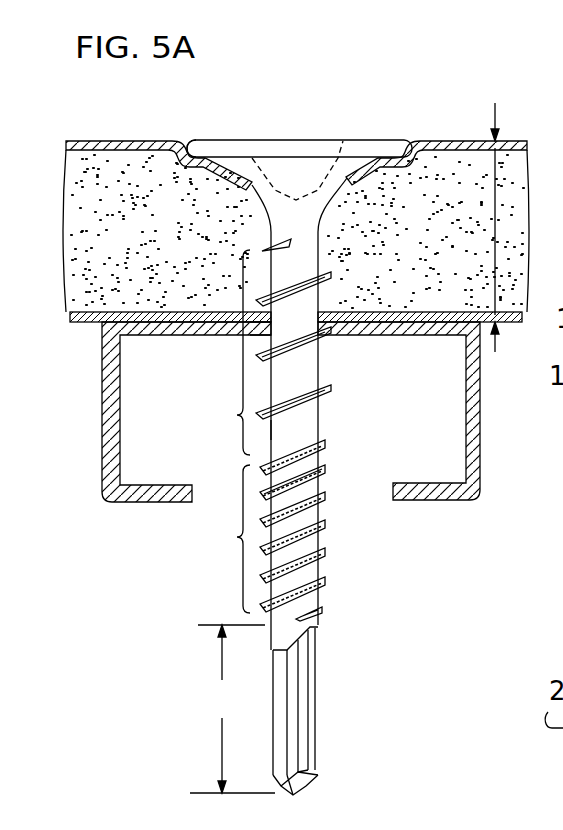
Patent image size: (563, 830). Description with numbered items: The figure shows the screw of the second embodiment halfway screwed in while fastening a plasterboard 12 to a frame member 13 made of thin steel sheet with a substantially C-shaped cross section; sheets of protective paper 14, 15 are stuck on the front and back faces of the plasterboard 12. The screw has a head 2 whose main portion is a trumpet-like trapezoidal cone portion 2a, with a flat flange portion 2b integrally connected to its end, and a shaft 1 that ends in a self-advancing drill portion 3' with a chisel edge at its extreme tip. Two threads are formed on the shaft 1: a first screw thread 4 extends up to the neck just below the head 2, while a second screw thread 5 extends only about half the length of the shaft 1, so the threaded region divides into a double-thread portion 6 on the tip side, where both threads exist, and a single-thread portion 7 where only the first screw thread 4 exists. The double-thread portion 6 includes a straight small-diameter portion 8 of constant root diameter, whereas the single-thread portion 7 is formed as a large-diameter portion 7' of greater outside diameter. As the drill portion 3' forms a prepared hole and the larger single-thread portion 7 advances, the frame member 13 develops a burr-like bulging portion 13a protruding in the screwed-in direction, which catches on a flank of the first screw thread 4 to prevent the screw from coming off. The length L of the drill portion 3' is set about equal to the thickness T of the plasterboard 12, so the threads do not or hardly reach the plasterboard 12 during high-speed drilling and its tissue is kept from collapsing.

The shaft 1 is at (320, 425).
The head 2 is at (345, 137).
The trapezoidal cone portion 2a is at (295, 168).
The flange portion 2b is at (228, 146).
The drill portion 3' is at (324, 711).
The first screw thread 4 is at (306, 348).
The second screw thread 5 is at (320, 580).
The double-thread portion 6 is at (230, 539).
The single-thread portion 7 is at (233, 352).
The large-diameter portion 7' is at (240, 439).
The small-diameter portion 8 is at (320, 595).
The plasterboard 12 is at (100, 256).
The frame member 13 is at (112, 418).
The bulging portion 13a is at (268, 332).
The protective paper 14 is at (96, 146).
The protective paper 15 is at (92, 323).
The length of the drill portion L is at (232, 709).
The thickness of the plasterboard T is at (495, 205).